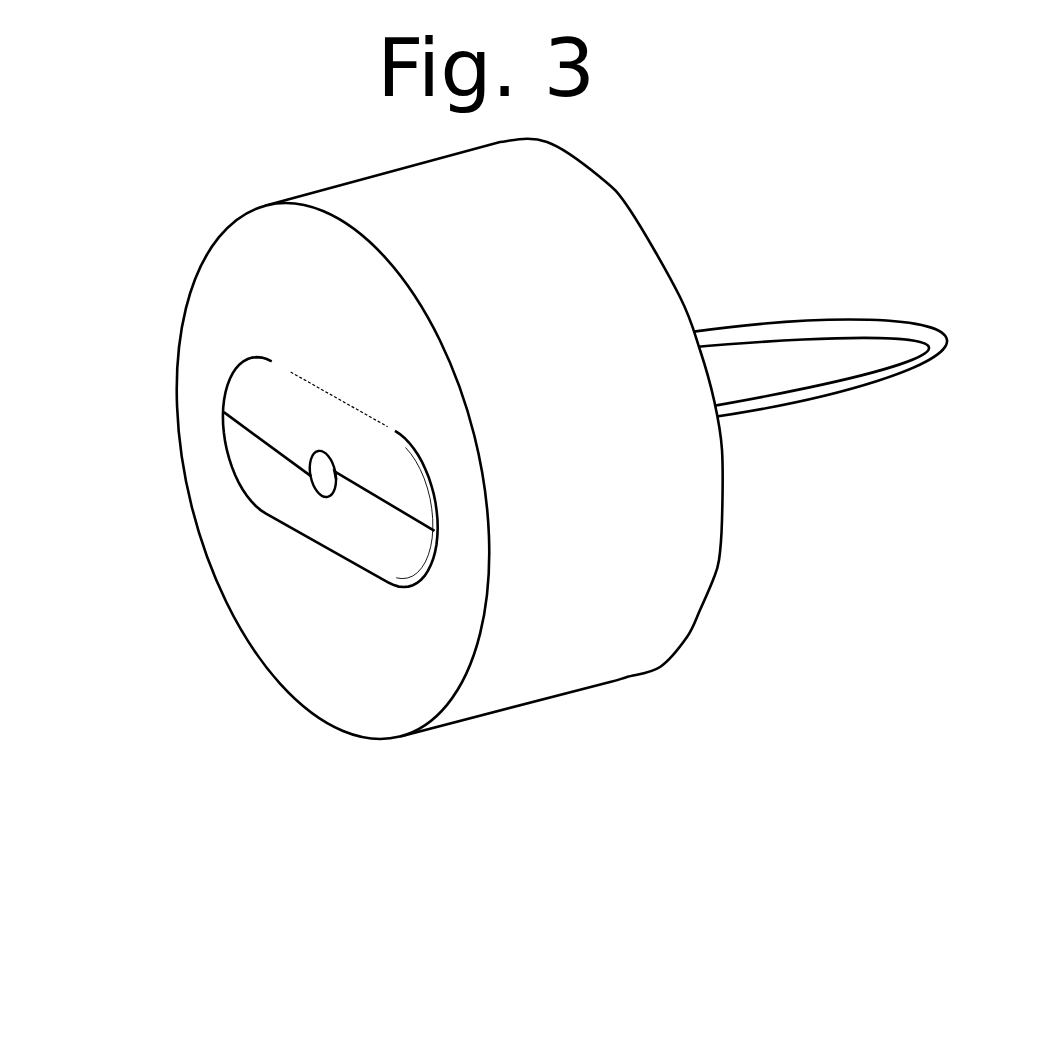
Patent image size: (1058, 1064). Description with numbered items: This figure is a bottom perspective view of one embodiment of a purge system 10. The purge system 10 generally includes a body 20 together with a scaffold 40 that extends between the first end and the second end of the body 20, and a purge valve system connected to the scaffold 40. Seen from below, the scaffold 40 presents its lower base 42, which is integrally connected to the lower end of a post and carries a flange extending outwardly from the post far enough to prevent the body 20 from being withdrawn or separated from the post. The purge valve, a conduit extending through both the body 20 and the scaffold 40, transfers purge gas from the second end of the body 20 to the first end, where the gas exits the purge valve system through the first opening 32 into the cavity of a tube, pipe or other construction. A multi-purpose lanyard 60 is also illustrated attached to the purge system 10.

The purge system 10 is at (807, 272).
The body 20 is at (580, 660).
The first opening 32 is at (292, 435).
The scaffold 40 is at (254, 492).
The lower base 42 is at (345, 559).
The multi-purpose lanyard 60 is at (849, 422).